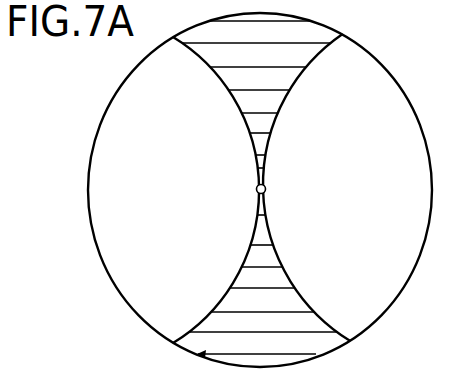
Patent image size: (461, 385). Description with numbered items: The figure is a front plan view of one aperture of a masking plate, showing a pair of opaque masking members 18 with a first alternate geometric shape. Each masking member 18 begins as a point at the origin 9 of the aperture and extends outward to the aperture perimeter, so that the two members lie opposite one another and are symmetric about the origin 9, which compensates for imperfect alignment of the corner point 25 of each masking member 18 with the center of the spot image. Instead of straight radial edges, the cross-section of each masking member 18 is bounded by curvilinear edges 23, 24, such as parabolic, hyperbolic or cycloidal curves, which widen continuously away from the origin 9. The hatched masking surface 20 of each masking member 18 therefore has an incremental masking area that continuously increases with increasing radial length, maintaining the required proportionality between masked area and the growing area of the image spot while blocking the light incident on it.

The masking member 18 is at (308, 48).
The masking surface 20 is at (226, 74).
The curvilinear edge 24 is at (306, 304).
The curvilinear edge 23 is at (208, 318).
The origin 9 is at (266, 188).
The corner point 25 is at (238, 172).